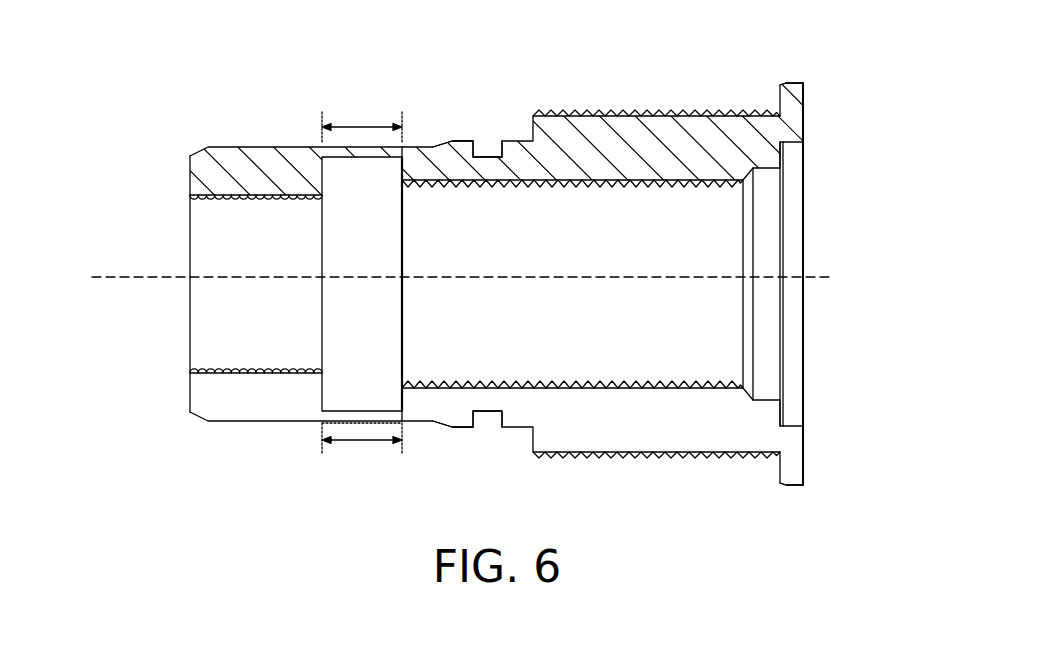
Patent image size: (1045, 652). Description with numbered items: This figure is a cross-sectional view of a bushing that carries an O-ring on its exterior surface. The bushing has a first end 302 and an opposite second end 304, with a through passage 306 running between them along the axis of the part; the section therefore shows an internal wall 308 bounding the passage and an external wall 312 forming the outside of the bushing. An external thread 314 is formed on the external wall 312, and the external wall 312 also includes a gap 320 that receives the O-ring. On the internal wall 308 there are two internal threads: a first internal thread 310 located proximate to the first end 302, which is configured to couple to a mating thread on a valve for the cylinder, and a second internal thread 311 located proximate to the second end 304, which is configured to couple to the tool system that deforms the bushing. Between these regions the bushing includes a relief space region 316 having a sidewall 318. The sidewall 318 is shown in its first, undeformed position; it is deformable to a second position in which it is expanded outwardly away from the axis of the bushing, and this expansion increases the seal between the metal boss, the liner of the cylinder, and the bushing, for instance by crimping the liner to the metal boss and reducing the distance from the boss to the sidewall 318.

The first end 302 is at (803, 83).
The second end 304 is at (196, 150).
The through passage 306 is at (458, 277).
The internal wall 308 is at (212, 200).
The first internal thread 310 is at (720, 186).
The second internal thread 311 is at (248, 196).
The external wall 312 is at (463, 140).
The external thread 314 is at (698, 110).
The relief space region 316 is at (360, 127).
The sidewall 318 is at (405, 148).
The gap 320 is at (489, 157).